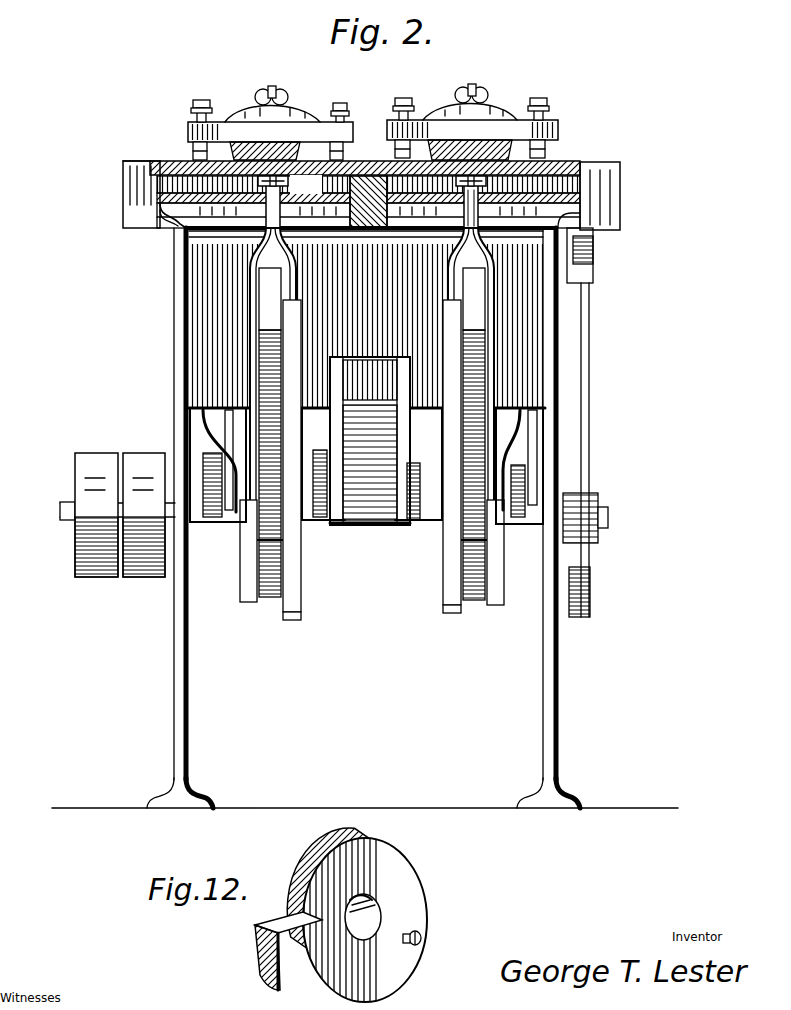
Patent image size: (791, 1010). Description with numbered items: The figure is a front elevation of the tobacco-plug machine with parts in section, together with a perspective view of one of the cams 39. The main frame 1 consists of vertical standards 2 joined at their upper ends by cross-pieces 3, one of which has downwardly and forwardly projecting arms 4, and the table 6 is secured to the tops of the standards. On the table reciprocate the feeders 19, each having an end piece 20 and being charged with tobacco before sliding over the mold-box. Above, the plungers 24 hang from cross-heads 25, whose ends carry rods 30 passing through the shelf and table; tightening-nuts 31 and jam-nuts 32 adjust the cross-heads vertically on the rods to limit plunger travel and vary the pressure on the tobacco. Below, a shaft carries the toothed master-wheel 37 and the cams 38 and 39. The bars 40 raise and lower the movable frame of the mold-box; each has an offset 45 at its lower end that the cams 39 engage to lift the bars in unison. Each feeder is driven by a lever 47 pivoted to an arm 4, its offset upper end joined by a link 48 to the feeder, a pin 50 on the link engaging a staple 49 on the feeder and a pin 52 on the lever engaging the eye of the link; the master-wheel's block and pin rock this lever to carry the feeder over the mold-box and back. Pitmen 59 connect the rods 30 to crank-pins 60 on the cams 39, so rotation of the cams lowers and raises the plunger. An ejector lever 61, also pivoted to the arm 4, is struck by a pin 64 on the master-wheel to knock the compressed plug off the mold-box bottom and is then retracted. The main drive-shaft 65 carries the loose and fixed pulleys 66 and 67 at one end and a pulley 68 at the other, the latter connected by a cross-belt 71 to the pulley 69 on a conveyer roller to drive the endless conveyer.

In FIG. 2, the main frame 1 is at (354, 318).
In FIG. 2, the vertical standards 2 is at (175, 372).
In FIG. 2, the cross-pieces 3 is at (366, 319).
In FIG. 2, the arms 4 is at (272, 283).
In FIG. 2, the table 6 is at (150, 163).
In FIG. 2, the feeders 19 is at (124, 182).
In FIG. 2, the end piece 20 is at (283, 183).
In FIG. 2, the plungers 24 is at (256, 105).
In FIG. 2, the cross-heads 25 is at (318, 104).
In FIG. 2, the rods 30 is at (200, 104).
In FIG. 2, the tightening-nuts 31 is at (193, 112).
In FIG. 2, the jam-nuts 32 is at (193, 150).
In FIG. 2, the toothed master-wheel 37 is at (270, 600).
In FIG. 2, the cams 38 is at (215, 520).
In FIG. 2, the cams 39 is at (417, 520).
In FIG. 12, the cams 39 is at (361, 919).
In FIG. 2, the bars 40 is at (215, 422).
In FIG. 2, the offset 45 is at (466, 190).
In FIG. 2, the lever 47 is at (284, 607).
In FIG. 2, the link 48 is at (163, 214).
In FIG. 2, the staple 49 is at (276, 178).
In FIG. 2, the pin 50 is at (268, 178).
In FIG. 2, the pin 52 is at (620, 193).
In FIG. 2, the pitmen 59 is at (331, 388).
In FIG. 12, the crank-pins 60 is at (421, 938).
In FIG. 2, the lever 61 is at (254, 505).
In FIG. 2, the pin 64 is at (255, 573).
In FIG. 2, the main drive-shaft 65 is at (65, 522).
In FIG. 2, the loose pulley 66 is at (138, 575).
In FIG. 2, the fixed pulley 67 is at (92, 575).
In FIG. 2, the pulley 68 is at (590, 588).
In FIG. 2, the pulley 69 is at (593, 262).
In FIG. 2, the cross-belt 71 is at (590, 355).